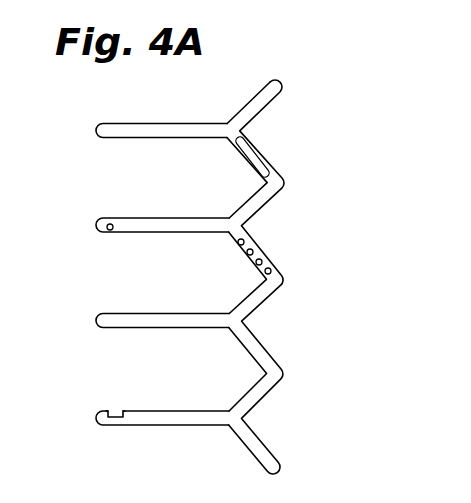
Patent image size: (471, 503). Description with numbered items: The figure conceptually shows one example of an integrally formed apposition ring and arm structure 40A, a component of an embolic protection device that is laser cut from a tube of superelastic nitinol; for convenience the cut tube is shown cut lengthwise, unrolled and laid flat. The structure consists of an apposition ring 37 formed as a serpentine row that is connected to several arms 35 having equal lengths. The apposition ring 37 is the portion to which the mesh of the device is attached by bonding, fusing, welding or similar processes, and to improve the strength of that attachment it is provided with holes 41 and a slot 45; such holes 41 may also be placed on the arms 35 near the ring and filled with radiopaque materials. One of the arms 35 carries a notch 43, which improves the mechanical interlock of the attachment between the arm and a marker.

The apposition ring and arm structure 40A is at (347, 88).
The arms 35 is at (170, 138).
The apposition ring 37 is at (268, 206).
The holes 41 is at (106, 231).
The notch 43 is at (118, 412).
The slots 45 is at (252, 149).